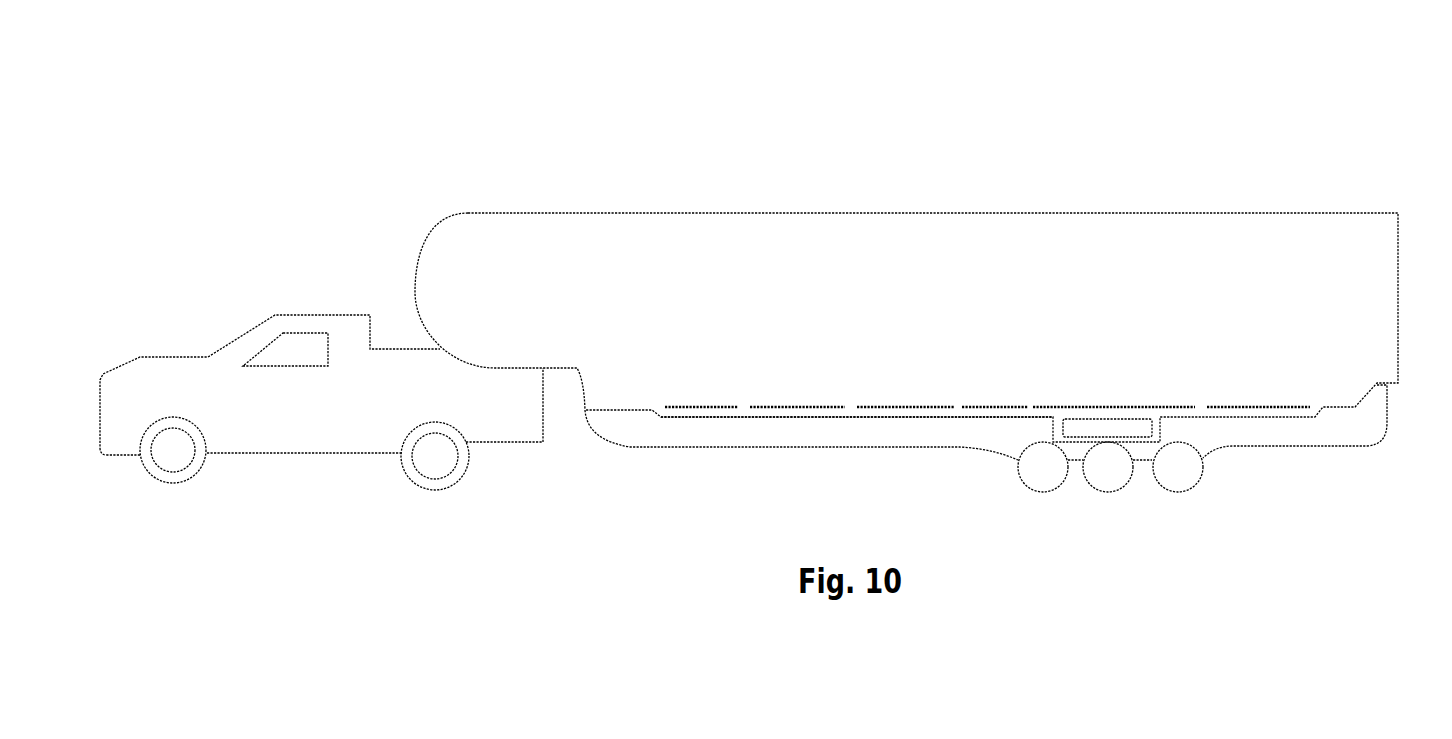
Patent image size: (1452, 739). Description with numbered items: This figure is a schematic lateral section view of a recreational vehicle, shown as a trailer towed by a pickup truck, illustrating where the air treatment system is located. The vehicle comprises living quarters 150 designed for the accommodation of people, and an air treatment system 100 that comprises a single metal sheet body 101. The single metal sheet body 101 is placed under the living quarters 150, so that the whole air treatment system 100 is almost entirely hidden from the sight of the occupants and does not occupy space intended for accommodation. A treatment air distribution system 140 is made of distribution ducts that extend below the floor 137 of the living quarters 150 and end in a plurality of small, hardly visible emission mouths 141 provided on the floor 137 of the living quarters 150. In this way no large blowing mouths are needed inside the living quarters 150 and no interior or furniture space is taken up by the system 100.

The living quarters 150 is at (1035, 255).
The emission mouths 141 is at (957, 396).
The floor 137 is at (1032, 407).
The treatment air distribution system 140 is at (778, 424).
The air treatment system 100 is at (1057, 428).
The single metal sheet body 101 is at (1138, 432).